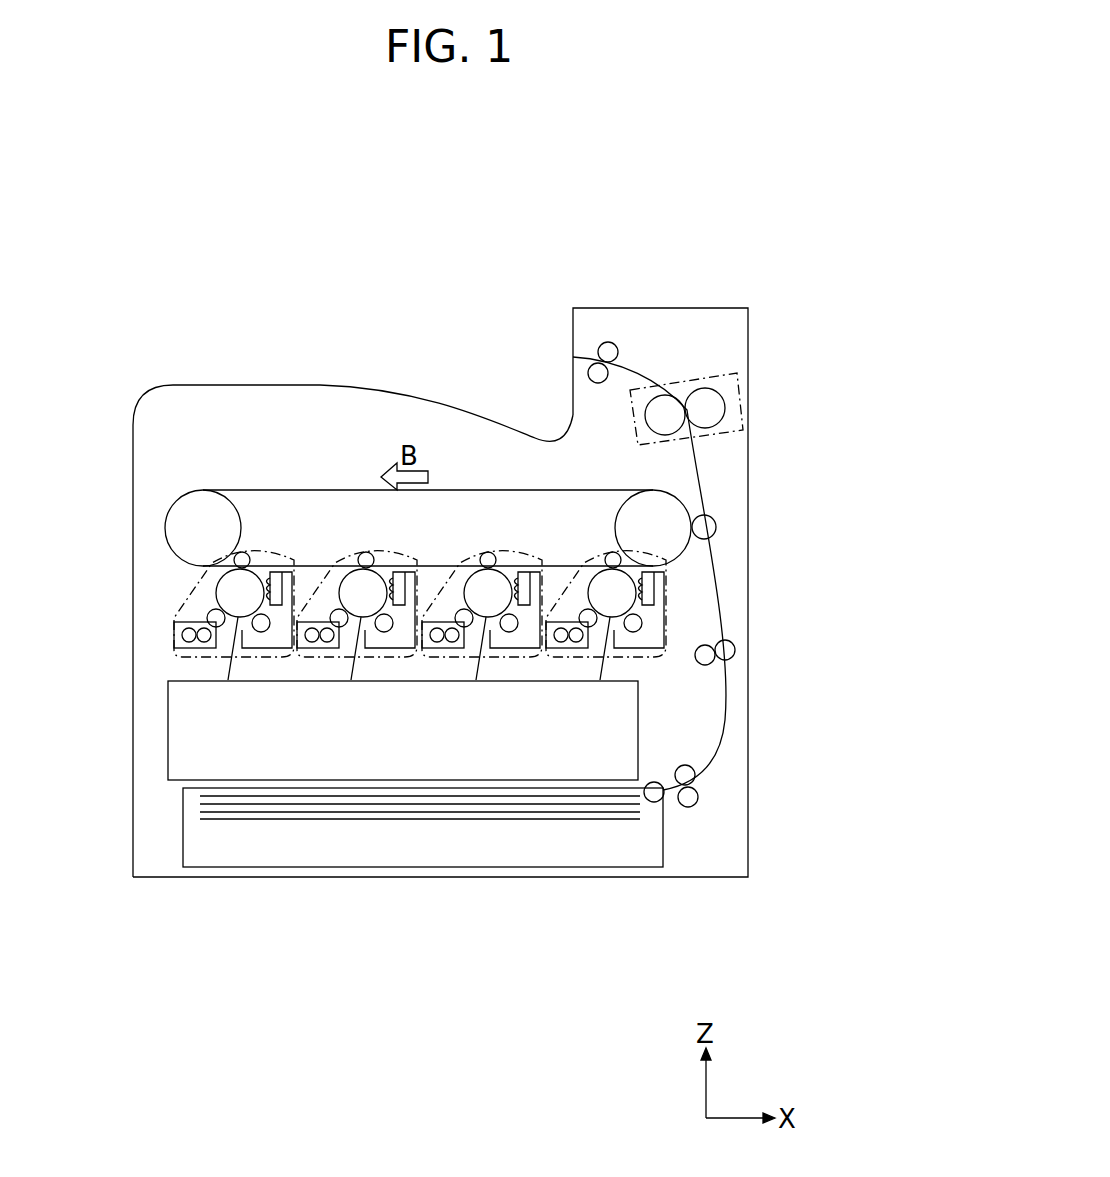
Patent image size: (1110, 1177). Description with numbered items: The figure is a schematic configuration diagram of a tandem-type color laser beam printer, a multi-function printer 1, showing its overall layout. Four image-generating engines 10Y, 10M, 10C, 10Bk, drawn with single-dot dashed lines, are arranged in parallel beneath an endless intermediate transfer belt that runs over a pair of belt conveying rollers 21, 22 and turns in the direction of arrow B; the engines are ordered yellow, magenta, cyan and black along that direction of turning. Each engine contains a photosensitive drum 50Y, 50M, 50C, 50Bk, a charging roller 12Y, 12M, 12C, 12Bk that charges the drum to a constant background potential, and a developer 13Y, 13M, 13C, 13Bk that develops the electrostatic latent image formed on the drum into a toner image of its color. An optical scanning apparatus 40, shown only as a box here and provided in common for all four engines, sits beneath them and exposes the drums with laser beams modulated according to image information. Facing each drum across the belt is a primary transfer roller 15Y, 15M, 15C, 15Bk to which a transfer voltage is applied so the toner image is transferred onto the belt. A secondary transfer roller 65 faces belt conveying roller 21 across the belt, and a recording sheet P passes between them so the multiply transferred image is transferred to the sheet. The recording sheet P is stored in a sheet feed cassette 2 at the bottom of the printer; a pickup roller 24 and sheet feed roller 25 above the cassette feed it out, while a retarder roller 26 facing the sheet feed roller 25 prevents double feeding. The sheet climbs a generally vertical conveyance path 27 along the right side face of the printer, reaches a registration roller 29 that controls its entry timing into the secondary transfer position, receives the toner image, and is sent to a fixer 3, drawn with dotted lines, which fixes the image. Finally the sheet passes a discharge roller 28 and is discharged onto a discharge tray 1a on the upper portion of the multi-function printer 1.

The multi-function printer 1 is at (163, 590).
The discharge tray 1a is at (383, 385).
The sheet feed cassette 2 is at (663, 852).
The fixer 3 is at (737, 373).
The yellow image-generating engine 10Y is at (270, 681).
The magenta image-generating engine 10M is at (383, 681).
The cyan image-generating engine 10C is at (522, 681).
The black image-generating engine 10Bk is at (670, 671).
The charging roller 12Y is at (262, 674).
The charging roller 12M is at (386, 674).
The charging roller 12C is at (510, 674).
The charging roller 12Bk is at (634, 622).
The developer 13Y is at (177, 618).
The developer 13M is at (318, 620).
The developer 13C is at (434, 620).
The developer 13Bk is at (558, 620).
The primary transfer roller 15Y is at (255, 566).
The primary transfer roller 15M is at (372, 566).
The primary transfer roller 15C is at (496, 566).
The primary transfer roller 15Bk is at (619, 566).
The belt conveying roller 21 is at (672, 510).
The belt conveying roller 22 is at (185, 517).
The pickup roller 24 is at (654, 802).
The sheet feed roller 25 is at (690, 775).
The retarder roller 26 is at (694, 798).
The conveyance path 27 is at (692, 472).
The discharge roller 28 is at (605, 342).
The registration roller 29 is at (727, 650).
The optical scanning apparatus 40 is at (655, 738).
The photosensitive drum 50Y is at (232, 592).
The photosensitive drum 50M is at (355, 588).
The photosensitive drum 50C is at (495, 585).
The photosensitive drum 50Bk is at (615, 593).
The secondary transfer roller 65 is at (706, 527).
The recording sheet P is at (450, 820).